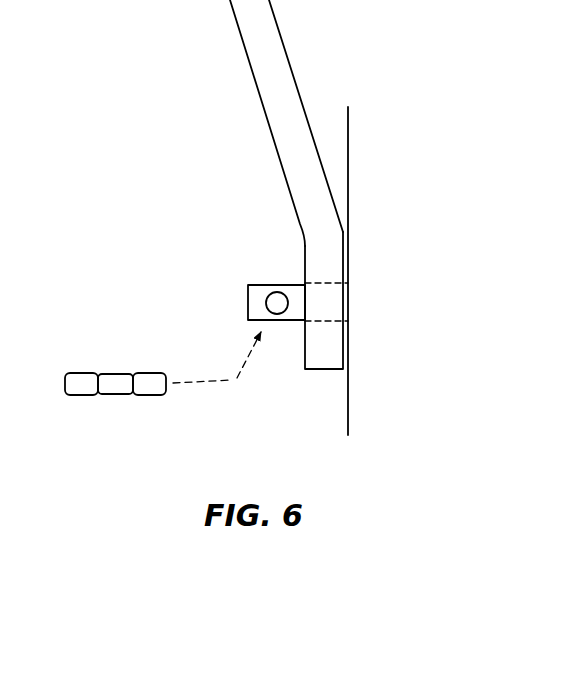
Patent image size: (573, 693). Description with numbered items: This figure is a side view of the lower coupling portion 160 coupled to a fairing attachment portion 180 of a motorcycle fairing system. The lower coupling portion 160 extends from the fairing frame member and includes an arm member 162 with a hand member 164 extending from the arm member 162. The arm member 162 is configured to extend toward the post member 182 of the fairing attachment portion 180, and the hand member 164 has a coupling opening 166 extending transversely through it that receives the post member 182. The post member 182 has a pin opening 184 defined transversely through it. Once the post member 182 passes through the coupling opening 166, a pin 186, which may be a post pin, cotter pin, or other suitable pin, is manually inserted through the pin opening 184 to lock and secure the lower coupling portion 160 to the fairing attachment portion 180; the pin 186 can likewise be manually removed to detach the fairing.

The lower coupling portion 160 is at (287, 217).
The arm member 162 is at (283, 30).
The hand member 164 is at (302, 358).
The coupling opening 166 is at (328, 321).
The fairing attachment portion 180 is at (239, 260).
The post member 182 is at (248, 297).
The pin opening 184 is at (272, 272).
The pin 186 is at (122, 394).